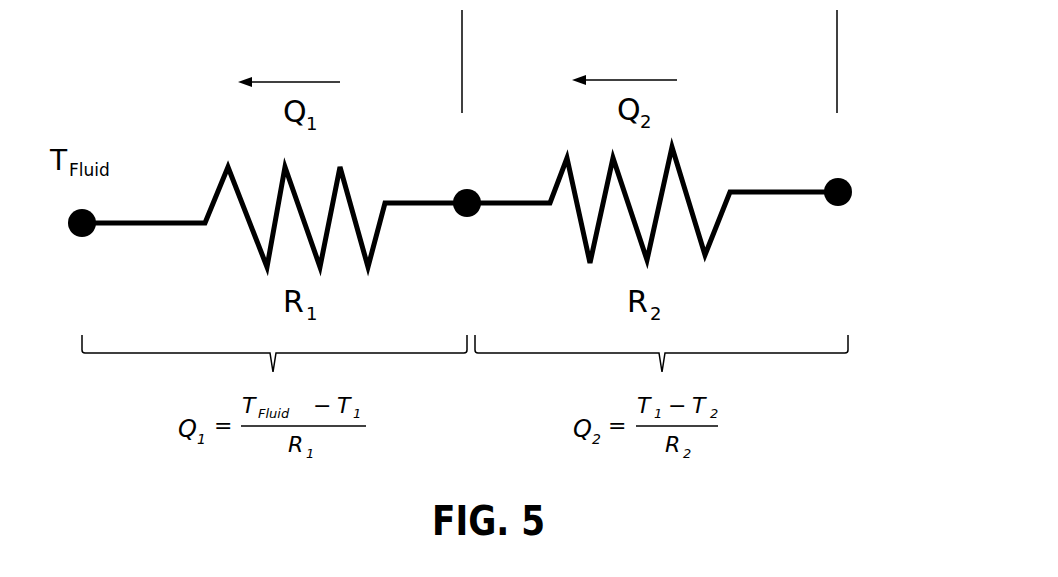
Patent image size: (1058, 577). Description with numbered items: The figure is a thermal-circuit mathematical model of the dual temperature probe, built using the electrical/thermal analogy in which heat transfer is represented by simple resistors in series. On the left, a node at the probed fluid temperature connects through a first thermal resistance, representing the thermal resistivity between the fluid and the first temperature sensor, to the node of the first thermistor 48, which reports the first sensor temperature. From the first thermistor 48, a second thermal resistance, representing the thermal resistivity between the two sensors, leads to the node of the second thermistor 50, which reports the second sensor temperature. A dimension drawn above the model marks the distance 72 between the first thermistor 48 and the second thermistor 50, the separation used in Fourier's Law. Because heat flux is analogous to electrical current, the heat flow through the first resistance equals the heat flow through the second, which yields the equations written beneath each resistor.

The first thermistor 48 is at (465, 217).
The second thermistor 50 is at (836, 206).
The distance between first and second thermistors 72 is at (837, 37).